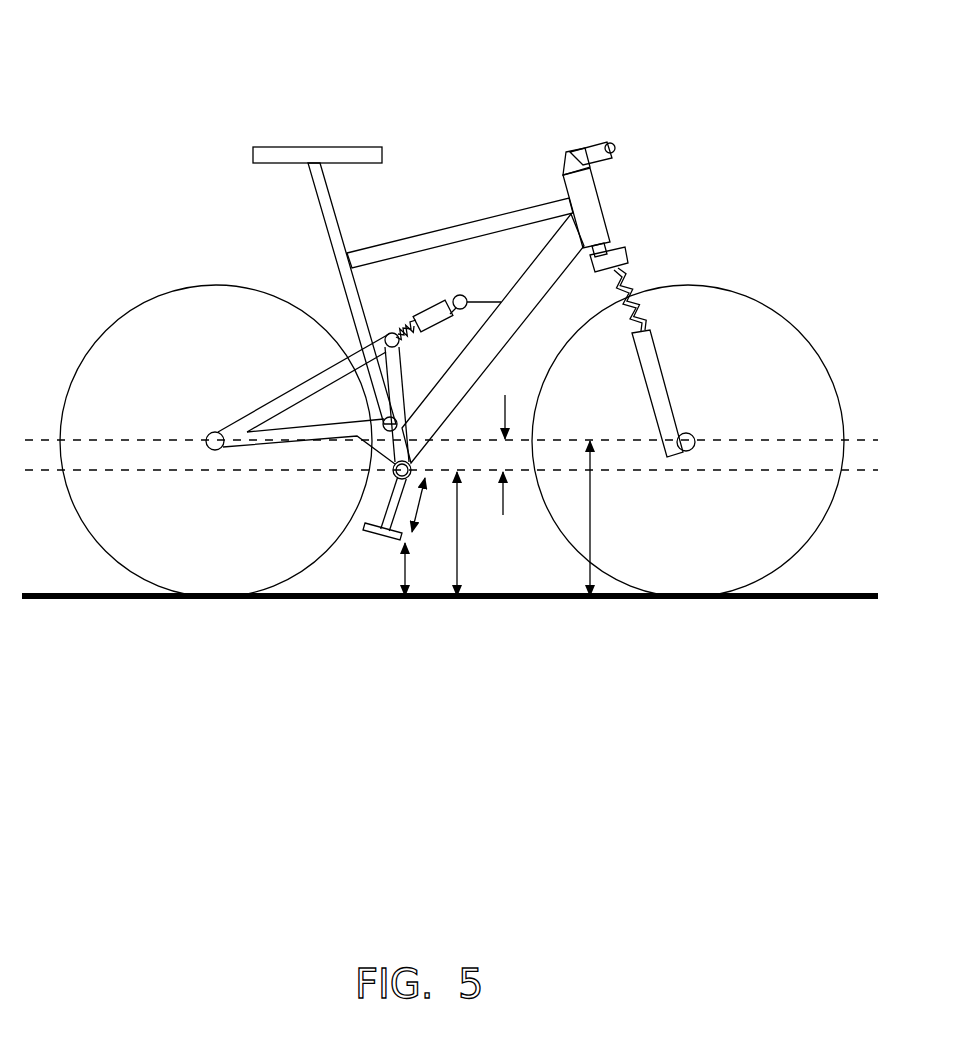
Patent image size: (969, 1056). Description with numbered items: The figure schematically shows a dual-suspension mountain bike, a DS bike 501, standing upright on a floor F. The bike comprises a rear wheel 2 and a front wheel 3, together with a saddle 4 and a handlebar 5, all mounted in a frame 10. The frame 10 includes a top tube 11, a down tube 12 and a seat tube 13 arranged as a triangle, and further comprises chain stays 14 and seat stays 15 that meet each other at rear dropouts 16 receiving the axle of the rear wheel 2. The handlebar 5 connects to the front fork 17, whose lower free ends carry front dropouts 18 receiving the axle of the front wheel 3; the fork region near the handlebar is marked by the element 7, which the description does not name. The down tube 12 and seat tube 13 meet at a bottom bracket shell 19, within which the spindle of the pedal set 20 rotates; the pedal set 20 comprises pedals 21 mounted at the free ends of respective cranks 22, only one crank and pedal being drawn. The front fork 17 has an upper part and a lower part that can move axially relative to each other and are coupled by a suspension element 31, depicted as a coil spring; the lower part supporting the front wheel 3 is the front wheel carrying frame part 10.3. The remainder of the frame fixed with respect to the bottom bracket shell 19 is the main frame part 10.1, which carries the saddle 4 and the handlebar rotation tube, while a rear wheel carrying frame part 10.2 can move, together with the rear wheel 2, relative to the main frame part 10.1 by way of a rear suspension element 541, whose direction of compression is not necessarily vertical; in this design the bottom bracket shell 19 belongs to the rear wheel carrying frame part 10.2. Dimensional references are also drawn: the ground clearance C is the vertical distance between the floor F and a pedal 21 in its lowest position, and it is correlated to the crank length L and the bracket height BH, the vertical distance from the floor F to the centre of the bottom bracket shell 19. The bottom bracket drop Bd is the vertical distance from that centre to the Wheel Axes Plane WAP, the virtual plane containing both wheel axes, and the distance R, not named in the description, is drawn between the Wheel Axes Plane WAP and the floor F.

The DS bike 501 is at (193, 88).
The rear wheel 2 is at (140, 302).
The front wheel 3 is at (743, 295).
The saddle 4 is at (342, 147).
The handlebar 5 is at (613, 140).
The stem 7 is at (573, 152).
The frame 10 is at (463, 158).
The main frame part 10.1 is at (522, 200).
The rear wheel carrying frame part 10.2 is at (275, 395).
The front wheel carrying frame part 10.3 is at (672, 385).
The top tube 11 is at (463, 221).
The down tube 12 is at (517, 273).
The seat tube 13 is at (358, 293).
The chain stays 14 is at (274, 445).
The seat stays 15 is at (298, 385).
The rear dropouts 16 is at (207, 435).
The front fork 17 is at (658, 322).
The front dropouts 18 is at (693, 437).
The bottom bracket shell 19 is at (407, 463).
The pedal set 20 is at (313, 633).
The pedal 21 is at (388, 542).
The crank 22 is at (362, 528).
The suspension element 31 is at (635, 283).
The rear suspension element 541 is at (424, 306).
The floor F is at (745, 600).
The Wheel Axes Plane WAP is at (110, 440).
The crank length L is at (422, 505).
The ground clearance C is at (414, 569).
The bracket height BH is at (473, 534).
The bottom bracket drop Bd is at (491, 458).
The wheel radius R is at (600, 518).